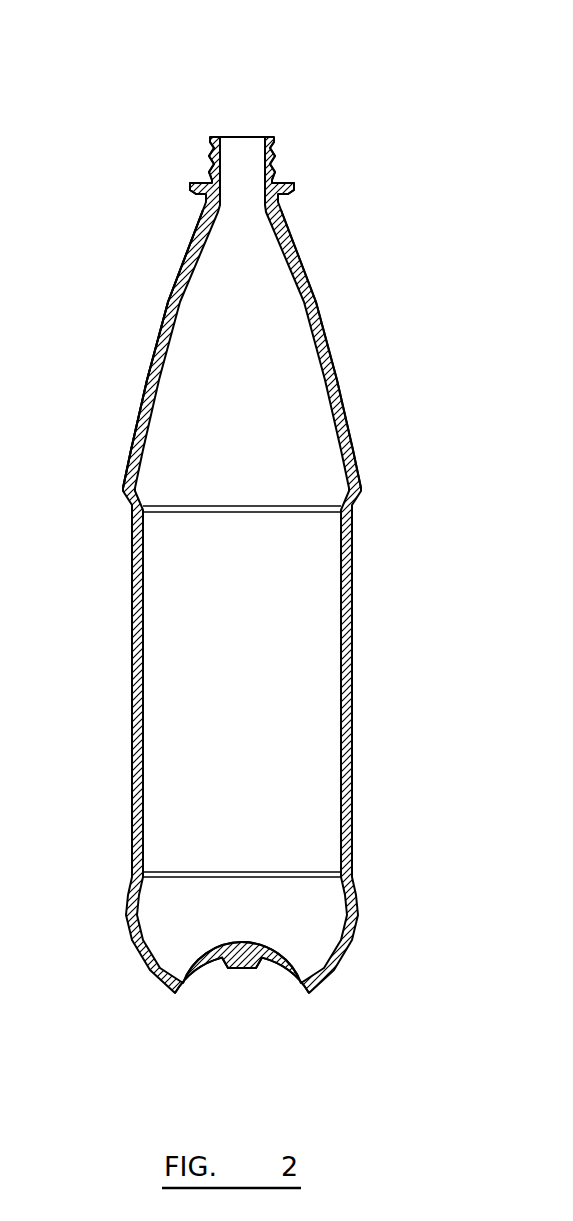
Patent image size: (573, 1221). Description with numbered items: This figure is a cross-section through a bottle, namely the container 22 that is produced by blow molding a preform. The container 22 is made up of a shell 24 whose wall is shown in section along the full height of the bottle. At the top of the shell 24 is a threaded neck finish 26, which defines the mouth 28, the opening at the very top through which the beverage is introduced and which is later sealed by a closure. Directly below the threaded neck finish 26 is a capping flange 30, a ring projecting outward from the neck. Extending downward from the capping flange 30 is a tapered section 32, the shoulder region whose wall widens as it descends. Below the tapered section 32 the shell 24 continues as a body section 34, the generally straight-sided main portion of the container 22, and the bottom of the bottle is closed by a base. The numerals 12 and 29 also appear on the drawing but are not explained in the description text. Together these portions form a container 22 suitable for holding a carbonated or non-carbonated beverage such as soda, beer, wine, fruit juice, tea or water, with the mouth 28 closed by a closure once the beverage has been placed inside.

The base 12 is at (233, 974).
The container 22 is at (355, 435).
The shell 24 is at (354, 622).
The threaded neck finish 26 is at (277, 160).
The mouth 28 is at (241, 135).
The neck bore 29 is at (266, 135).
The capping flange 30 is at (292, 184).
The tapered section 32 is at (168, 302).
The body section 34 is at (132, 734).